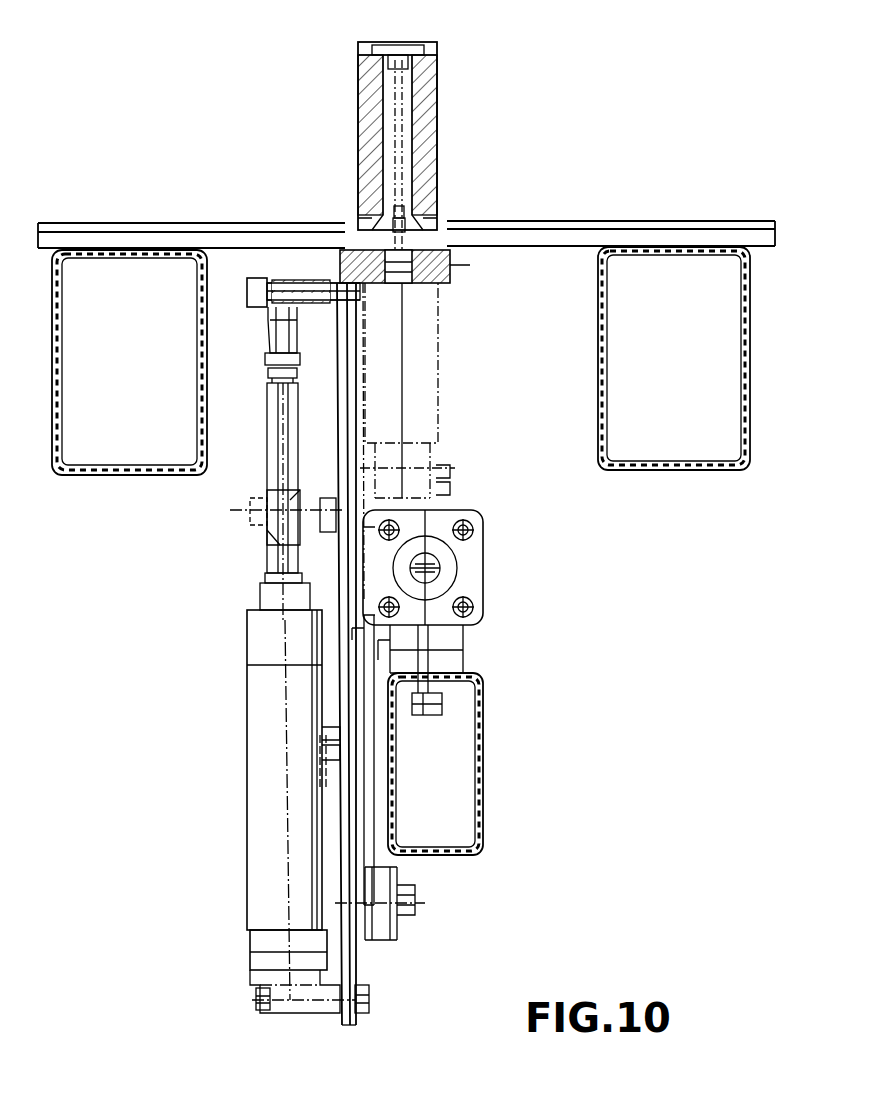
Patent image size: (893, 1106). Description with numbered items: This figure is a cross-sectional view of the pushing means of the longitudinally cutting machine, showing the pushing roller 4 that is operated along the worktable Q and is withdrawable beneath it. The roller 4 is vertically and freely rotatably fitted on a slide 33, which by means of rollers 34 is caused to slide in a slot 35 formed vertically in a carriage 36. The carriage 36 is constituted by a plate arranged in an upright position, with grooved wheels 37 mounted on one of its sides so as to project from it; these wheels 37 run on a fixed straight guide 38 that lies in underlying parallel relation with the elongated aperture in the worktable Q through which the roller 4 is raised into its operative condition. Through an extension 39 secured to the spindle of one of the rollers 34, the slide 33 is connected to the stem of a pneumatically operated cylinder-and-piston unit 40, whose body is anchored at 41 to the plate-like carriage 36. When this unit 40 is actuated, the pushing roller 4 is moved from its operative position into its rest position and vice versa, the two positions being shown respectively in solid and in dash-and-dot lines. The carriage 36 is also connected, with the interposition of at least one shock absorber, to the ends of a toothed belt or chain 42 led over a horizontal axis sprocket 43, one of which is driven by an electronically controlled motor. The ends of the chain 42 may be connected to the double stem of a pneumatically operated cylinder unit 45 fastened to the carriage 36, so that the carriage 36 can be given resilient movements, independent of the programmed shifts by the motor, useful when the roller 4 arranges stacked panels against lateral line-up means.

The worktable Q is at (190, 218).
The pushing roller 4 is at (442, 76).
The slide 33 is at (357, 370).
The rollers 34 is at (336, 268).
The slot 35 is at (340, 318).
The carriage 36 is at (335, 408).
The grooved wheels 37 is at (378, 632).
The fixed straight guide 38 is at (378, 782).
The extension 39 is at (305, 272).
The pneumatically operated cylinder-and-piston unit 40 is at (244, 640).
The anchoring point 41 is at (328, 1000).
The toothed belt or chain 42 is at (442, 707).
The horizontal axis sprocket 43 is at (457, 640).
The pneumatically operated cylinder unit 45 is at (478, 563).